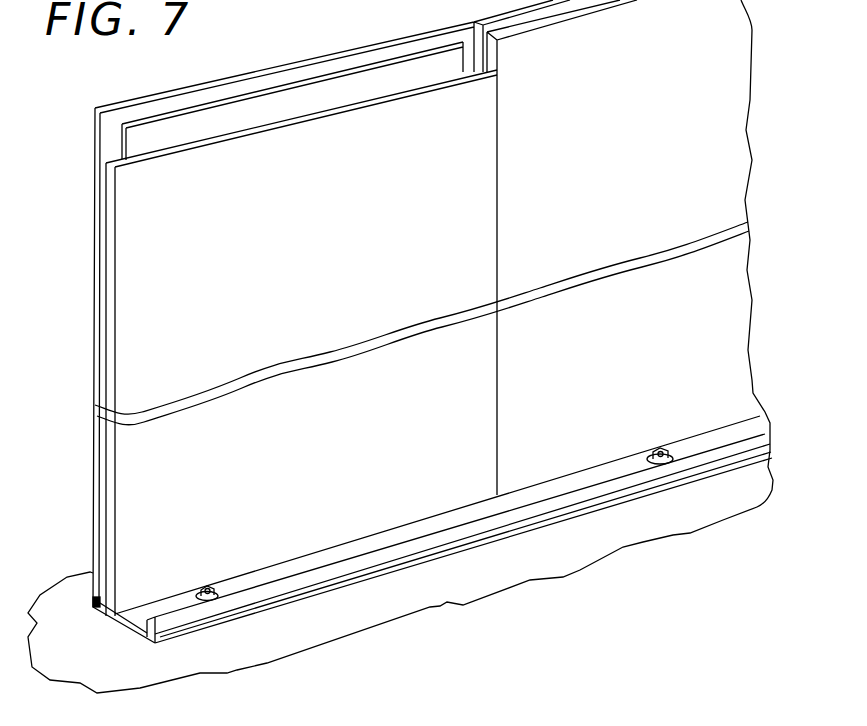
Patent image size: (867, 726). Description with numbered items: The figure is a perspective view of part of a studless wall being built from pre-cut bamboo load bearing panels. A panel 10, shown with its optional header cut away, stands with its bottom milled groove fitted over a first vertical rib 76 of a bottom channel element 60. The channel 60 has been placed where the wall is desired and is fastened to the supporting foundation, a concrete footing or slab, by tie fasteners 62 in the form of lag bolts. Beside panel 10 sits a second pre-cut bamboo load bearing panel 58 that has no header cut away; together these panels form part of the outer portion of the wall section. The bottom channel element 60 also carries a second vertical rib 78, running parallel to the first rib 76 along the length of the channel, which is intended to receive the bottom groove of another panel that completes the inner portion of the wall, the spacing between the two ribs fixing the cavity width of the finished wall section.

The bamboo load bearing panel 10 is at (128, 280).
The bamboo load bearing panel without header cut away 58 is at (718, 133).
The bottom channel element 60 is at (135, 615).
The tie fastener 62 is at (215, 593).
The first vertical rib 76 is at (93, 604).
The second vertical rib 78 is at (160, 618).